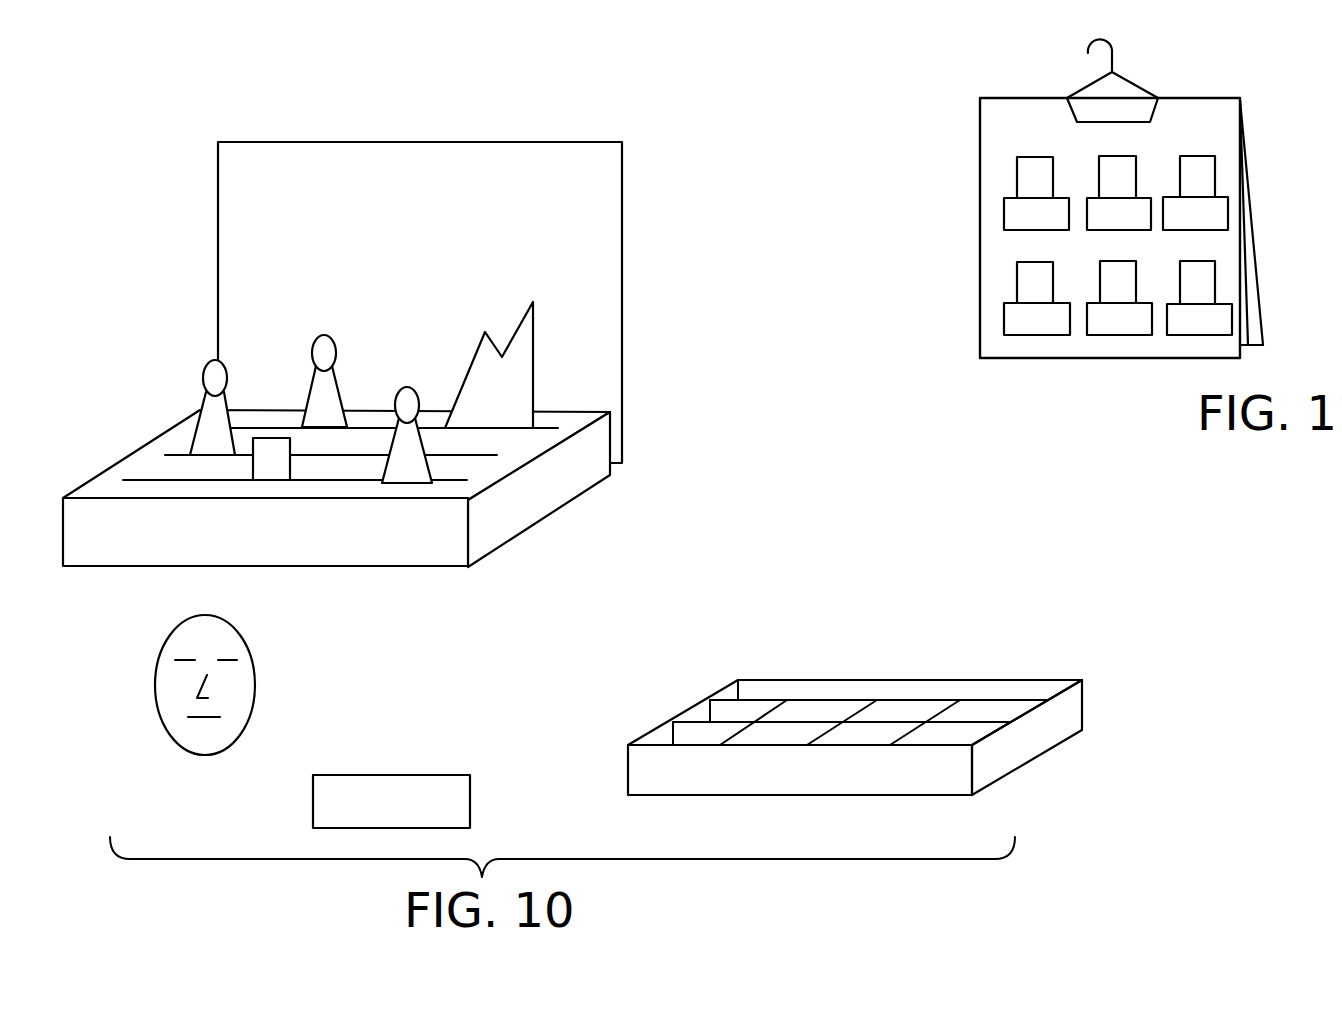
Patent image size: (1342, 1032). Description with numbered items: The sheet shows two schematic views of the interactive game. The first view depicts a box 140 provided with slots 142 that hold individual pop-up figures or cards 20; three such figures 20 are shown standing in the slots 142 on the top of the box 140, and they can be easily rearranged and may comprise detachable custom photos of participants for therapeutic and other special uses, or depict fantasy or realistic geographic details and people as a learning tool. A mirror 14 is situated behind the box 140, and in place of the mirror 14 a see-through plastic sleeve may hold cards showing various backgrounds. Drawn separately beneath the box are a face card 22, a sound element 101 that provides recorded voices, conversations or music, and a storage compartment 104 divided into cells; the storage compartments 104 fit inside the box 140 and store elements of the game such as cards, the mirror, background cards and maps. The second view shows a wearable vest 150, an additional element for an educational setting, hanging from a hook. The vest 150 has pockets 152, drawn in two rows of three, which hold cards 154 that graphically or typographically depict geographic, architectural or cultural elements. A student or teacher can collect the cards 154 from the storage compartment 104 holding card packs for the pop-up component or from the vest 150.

In FIG. 10, the mirror 14 is at (453, 173).
In FIG. 10, the pop-up figures 20 is at (213, 413).
In FIG. 10, the face card 22 is at (247, 678).
In FIG. 10, the sound element 101 is at (345, 792).
In FIG. 10, the storage compartments 104 is at (702, 713).
In FIG. 10, the box 140 is at (157, 548).
In FIG. 10, the slots 142 is at (212, 453).
In FIG. 11, the wearable vest 150 is at (1203, 123).
In FIG. 11, the pockets 152 is at (1018, 215).
In FIG. 11, the cards 154 is at (1030, 283).